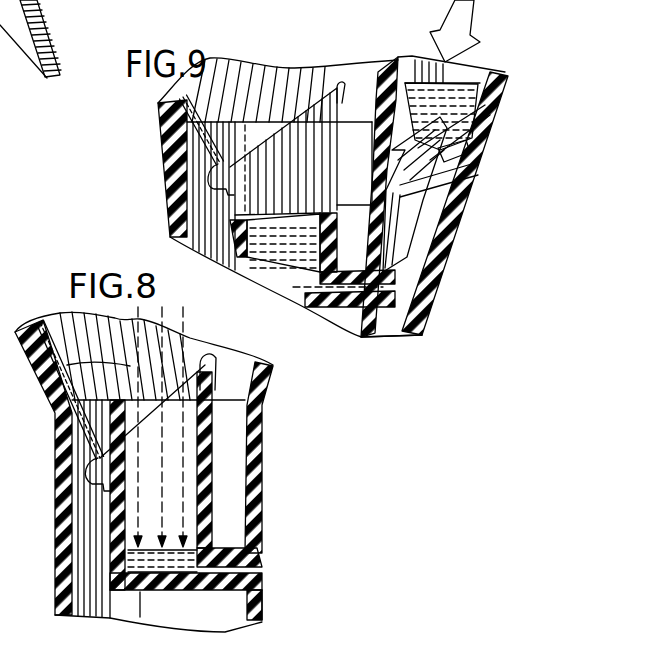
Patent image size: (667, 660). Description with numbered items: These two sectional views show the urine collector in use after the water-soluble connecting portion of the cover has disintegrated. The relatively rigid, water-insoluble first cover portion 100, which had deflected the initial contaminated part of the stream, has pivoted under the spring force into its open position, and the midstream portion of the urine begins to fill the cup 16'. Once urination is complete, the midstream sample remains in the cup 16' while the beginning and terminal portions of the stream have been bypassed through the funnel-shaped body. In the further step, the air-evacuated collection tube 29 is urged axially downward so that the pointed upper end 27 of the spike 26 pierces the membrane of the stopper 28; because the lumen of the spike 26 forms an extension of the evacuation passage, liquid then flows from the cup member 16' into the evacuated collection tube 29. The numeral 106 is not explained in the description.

In FIG. 9, the cup 16' is at (153, 168).
In FIG. 8, the cup 16' is at (260, 457).
In FIG. 9, the collection tube 29 is at (497, 97).
In FIG. 9, the stopper 28 is at (458, 160).
In FIG. 9, the pointed upper end 27 is at (460, 182).
In FIG. 9, the spike 26 is at (400, 238).
In FIG. 8, the first portion of cover means 100 is at (44, 325).
In FIG. 8, the hook 106 is at (78, 479).